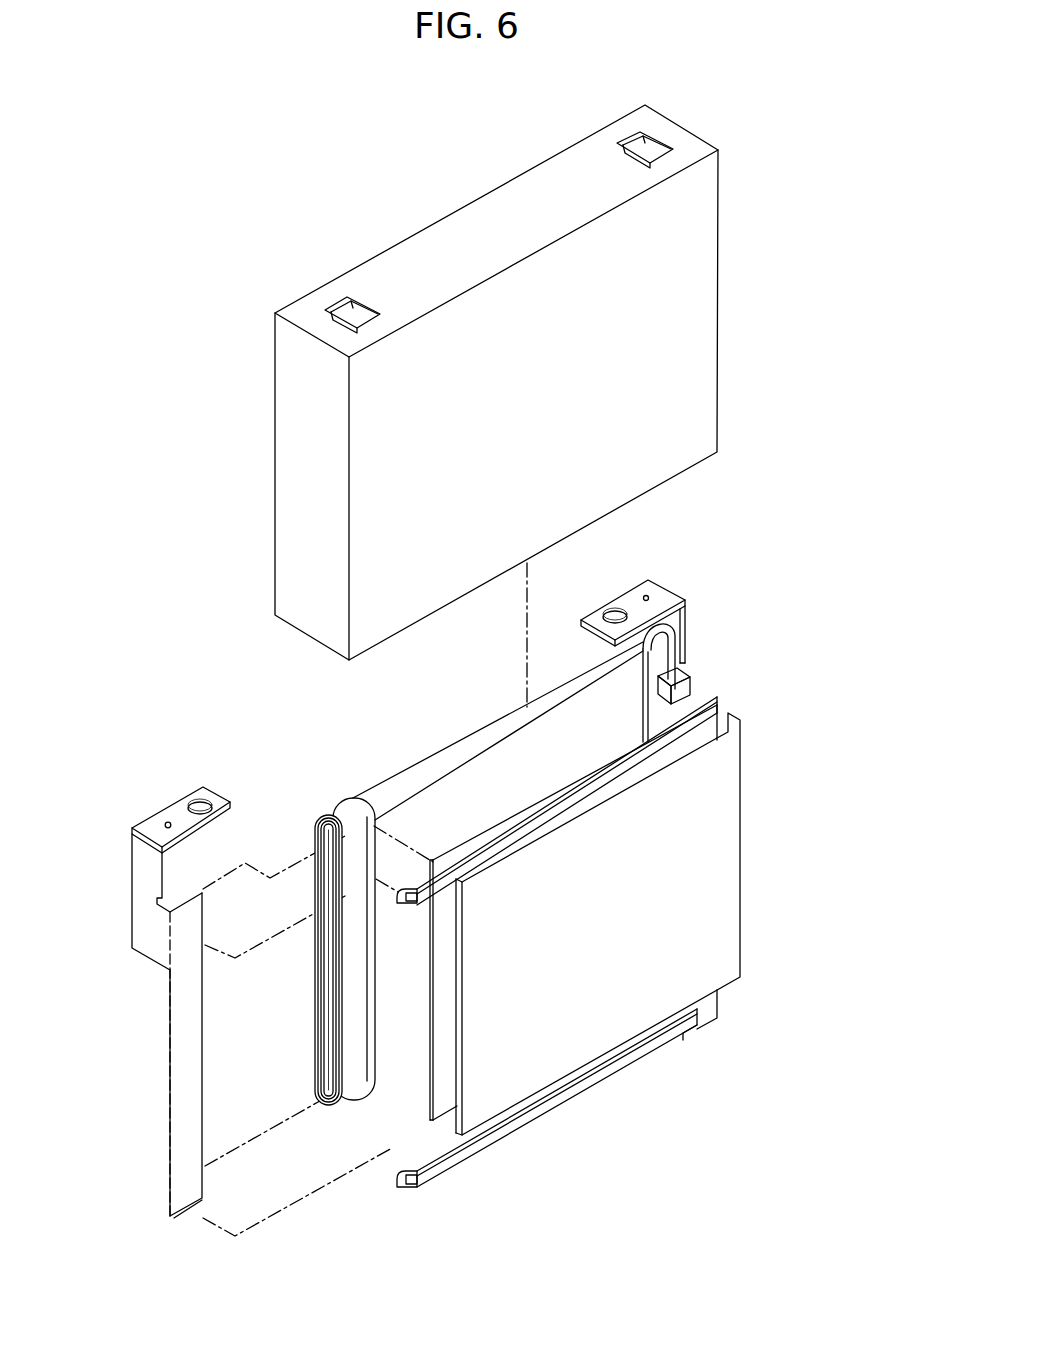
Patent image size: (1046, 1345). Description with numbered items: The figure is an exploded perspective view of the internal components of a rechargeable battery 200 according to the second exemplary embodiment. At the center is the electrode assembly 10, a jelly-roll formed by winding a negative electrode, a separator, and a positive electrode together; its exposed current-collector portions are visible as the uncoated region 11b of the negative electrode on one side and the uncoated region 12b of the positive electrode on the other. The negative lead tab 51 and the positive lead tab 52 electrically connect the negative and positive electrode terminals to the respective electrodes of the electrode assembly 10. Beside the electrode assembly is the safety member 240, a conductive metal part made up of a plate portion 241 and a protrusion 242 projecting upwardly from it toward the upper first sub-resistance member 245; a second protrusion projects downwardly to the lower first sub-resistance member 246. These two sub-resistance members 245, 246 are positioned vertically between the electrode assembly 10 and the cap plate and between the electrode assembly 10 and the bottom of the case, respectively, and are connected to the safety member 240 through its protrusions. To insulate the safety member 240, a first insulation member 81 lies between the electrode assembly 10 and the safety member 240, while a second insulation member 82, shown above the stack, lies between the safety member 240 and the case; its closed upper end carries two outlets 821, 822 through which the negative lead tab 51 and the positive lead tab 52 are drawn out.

The rechargeable battery 200 is at (281, 89).
The second insulation member 82 is at (503, 355).
The outlet 821 is at (348, 316).
The outlet 822 is at (651, 152).
The positive lead tab 52 is at (660, 602).
The uncoated region 12b is at (666, 648).
The first insulation member 81 is at (696, 710).
The protrusion 242 is at (712, 726).
The first sub-resistance member 245 is at (646, 776).
The safety member 240 is at (627, 929).
The plate portion 241 is at (720, 893).
The first sub-resistance member 246 is at (592, 1080).
The electrode assembly 10 is at (535, 845).
The uncoated region 11b is at (337, 814).
The negative lead tab 51 is at (140, 880).